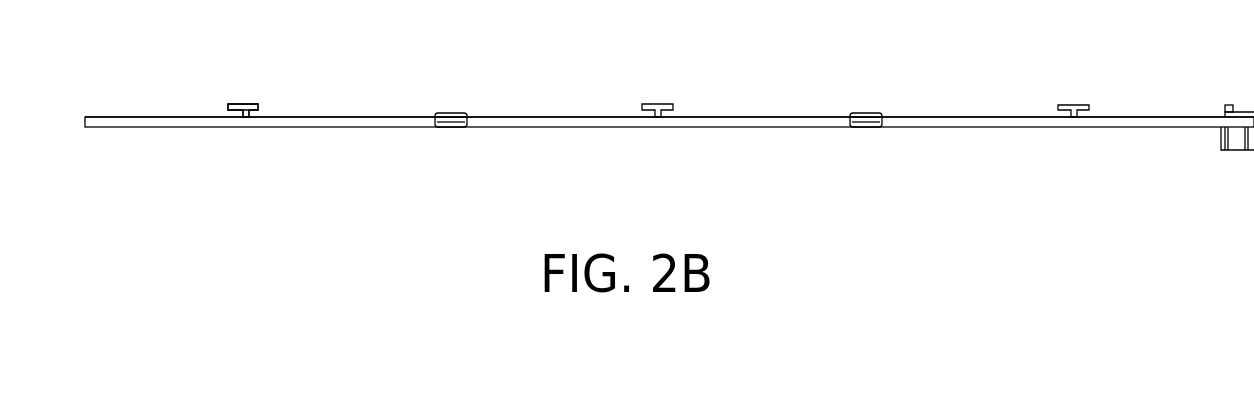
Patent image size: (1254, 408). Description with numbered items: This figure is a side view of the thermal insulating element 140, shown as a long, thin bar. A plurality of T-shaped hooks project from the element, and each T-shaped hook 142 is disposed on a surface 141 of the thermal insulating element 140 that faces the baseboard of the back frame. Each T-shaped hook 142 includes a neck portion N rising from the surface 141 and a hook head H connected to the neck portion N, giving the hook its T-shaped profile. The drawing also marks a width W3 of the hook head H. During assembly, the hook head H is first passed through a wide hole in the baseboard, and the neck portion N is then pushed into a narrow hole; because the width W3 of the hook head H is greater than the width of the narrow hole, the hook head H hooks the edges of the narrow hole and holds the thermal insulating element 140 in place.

The thermal insulating element 140 is at (1140, 128).
The surface 141 is at (763, 112).
The T-shaped hook 142 is at (325, 60).
The hook head H is at (256, 108).
The neck portion N is at (283, 112).
The width of the hook head W3 is at (258, 102).